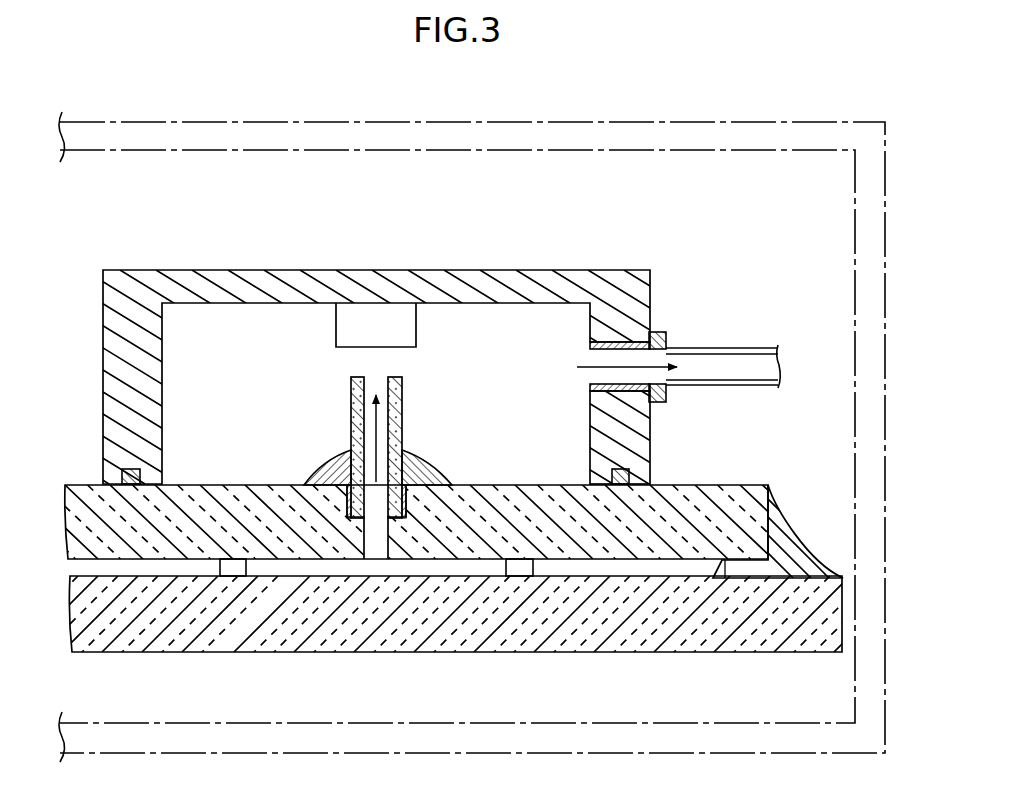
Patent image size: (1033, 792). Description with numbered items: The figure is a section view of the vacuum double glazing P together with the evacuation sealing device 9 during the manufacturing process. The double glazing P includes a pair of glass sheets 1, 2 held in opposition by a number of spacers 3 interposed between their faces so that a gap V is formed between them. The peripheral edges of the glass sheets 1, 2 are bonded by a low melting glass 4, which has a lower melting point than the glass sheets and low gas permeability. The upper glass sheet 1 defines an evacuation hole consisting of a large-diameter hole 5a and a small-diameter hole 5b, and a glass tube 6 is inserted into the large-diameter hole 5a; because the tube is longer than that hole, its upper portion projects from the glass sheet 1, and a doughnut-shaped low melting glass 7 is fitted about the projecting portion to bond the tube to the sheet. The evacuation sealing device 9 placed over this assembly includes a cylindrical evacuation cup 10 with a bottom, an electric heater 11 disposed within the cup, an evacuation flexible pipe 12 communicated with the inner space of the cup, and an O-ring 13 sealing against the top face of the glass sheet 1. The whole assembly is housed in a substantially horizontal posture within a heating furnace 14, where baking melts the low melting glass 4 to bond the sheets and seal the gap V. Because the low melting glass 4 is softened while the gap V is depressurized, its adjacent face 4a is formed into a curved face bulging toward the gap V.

The glass sheet 1 is at (524, 496).
The glass sheet 2 is at (477, 618).
The spacers 3 is at (240, 576).
The low melting glass 4 is at (797, 544).
The adjacent face 4a is at (708, 578).
The large-diameter hole 5a is at (356, 513).
The small-diameter hole 5b is at (383, 530).
The glass tube 6 is at (403, 412).
The low melting glass 7 is at (338, 462).
The evacuation sealing device 9 is at (197, 267).
The evacuation cup 10 is at (493, 270).
The electric heater 11 is at (413, 330).
The evacuation flexible pipe 12 is at (721, 350).
The O-ring 13 is at (131, 484).
The heating furnace 14 is at (290, 120).
The gap V is at (320, 572).
The double glazing P is at (157, 655).